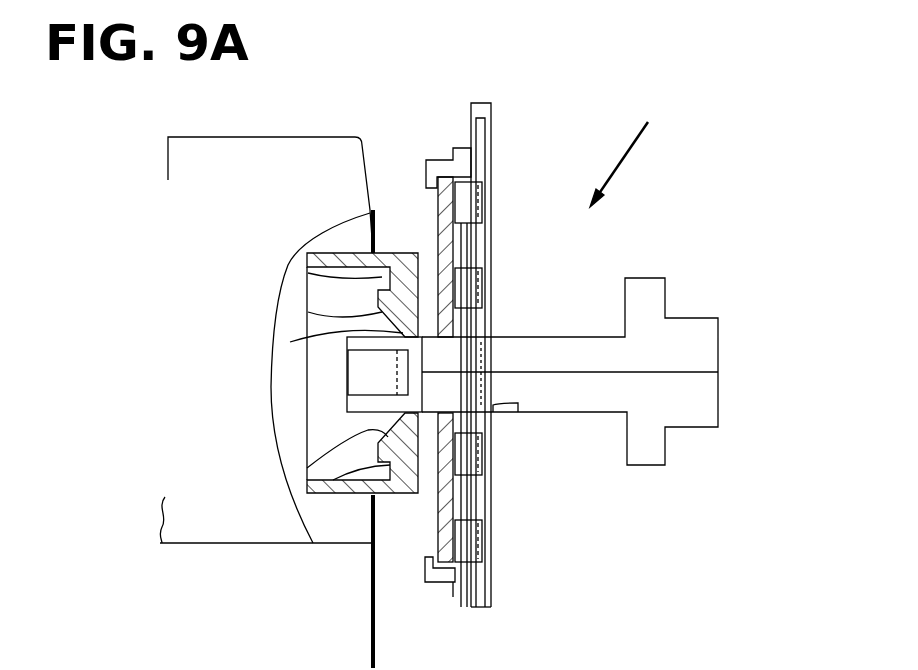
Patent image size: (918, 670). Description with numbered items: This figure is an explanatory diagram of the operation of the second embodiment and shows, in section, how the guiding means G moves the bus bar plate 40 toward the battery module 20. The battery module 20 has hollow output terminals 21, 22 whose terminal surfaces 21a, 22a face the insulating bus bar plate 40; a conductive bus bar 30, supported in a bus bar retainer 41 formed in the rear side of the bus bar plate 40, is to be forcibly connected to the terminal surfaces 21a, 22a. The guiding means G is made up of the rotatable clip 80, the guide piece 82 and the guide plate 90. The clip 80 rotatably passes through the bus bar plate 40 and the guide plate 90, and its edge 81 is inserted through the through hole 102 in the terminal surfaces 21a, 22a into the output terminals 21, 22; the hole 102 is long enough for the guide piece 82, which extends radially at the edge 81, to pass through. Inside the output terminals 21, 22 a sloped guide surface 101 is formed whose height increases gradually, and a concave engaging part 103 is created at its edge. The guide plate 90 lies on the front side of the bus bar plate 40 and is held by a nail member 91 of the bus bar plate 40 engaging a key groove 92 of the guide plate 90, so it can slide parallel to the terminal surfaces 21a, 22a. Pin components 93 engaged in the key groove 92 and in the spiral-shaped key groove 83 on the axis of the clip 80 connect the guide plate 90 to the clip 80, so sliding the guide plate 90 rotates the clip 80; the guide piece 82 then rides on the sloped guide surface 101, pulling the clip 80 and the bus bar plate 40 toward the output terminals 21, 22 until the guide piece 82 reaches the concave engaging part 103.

The battery module 20 is at (235, 150).
The output terminal 21 is at (389, 172).
The output terminal 22 is at (397, 253).
The terminal surface 21a is at (311, 581).
The terminal surface 22a is at (373, 545).
The bus bar 30 is at (430, 548).
The bus bar plate 40 is at (457, 148).
The bus bar retainer 41 is at (437, 351).
The rotatable clip 80 is at (590, 352).
The edge 81 is at (350, 395).
The guide piece 82 is at (365, 373).
The key groove 83 is at (510, 413).
The guide plate 90 is at (481, 105).
The nail member 91 is at (482, 208).
The key groove 92 is at (481, 157).
The pin component 93 is at (487, 362).
The sloped guide surface 101 is at (340, 318).
The through hole 102 is at (290, 342).
The concave engaging part 103 is at (383, 278).
The guiding means G is at (633, 149).